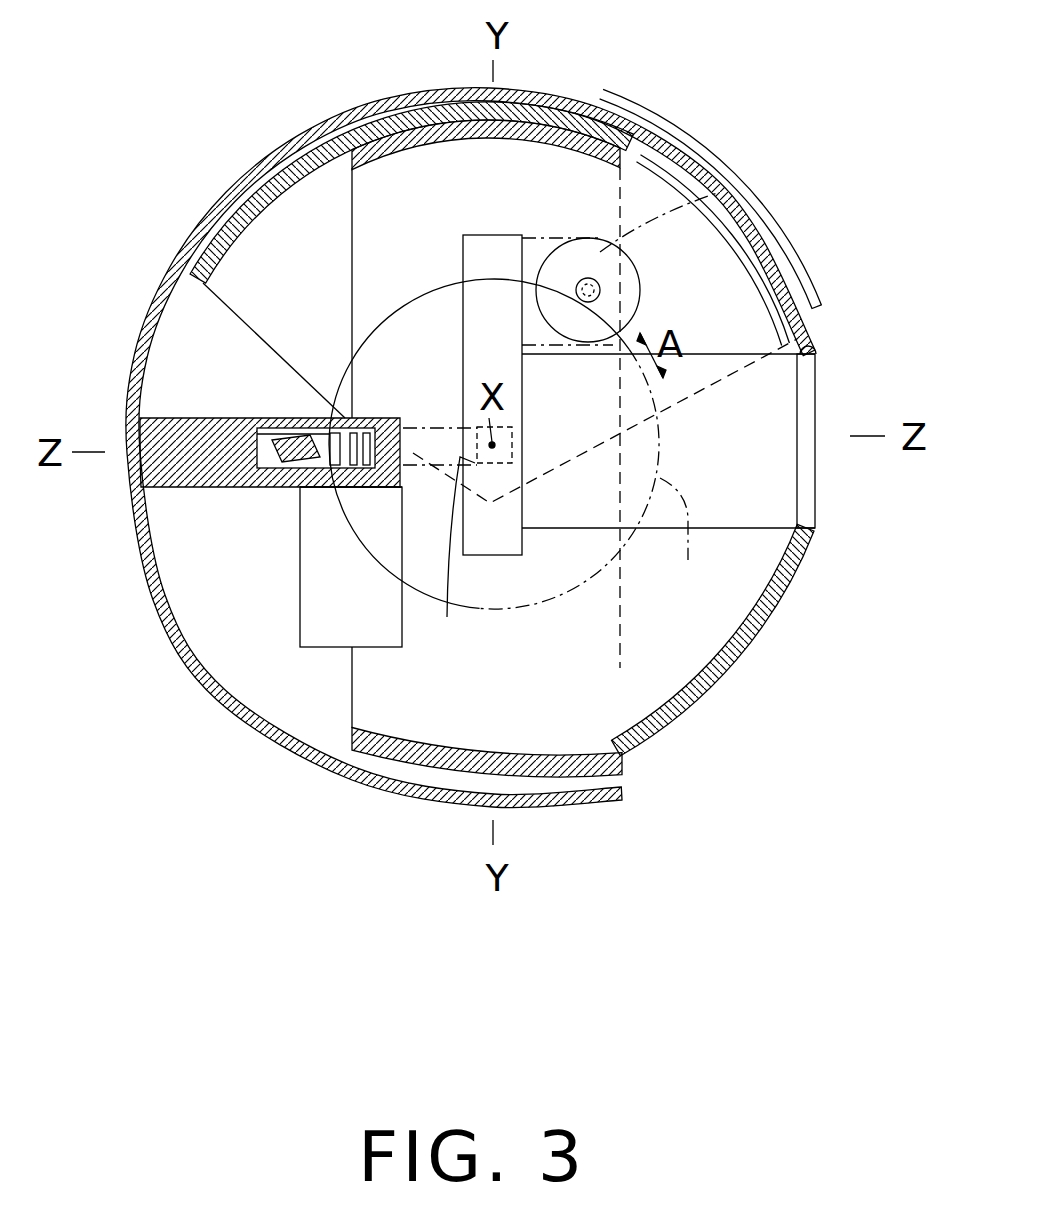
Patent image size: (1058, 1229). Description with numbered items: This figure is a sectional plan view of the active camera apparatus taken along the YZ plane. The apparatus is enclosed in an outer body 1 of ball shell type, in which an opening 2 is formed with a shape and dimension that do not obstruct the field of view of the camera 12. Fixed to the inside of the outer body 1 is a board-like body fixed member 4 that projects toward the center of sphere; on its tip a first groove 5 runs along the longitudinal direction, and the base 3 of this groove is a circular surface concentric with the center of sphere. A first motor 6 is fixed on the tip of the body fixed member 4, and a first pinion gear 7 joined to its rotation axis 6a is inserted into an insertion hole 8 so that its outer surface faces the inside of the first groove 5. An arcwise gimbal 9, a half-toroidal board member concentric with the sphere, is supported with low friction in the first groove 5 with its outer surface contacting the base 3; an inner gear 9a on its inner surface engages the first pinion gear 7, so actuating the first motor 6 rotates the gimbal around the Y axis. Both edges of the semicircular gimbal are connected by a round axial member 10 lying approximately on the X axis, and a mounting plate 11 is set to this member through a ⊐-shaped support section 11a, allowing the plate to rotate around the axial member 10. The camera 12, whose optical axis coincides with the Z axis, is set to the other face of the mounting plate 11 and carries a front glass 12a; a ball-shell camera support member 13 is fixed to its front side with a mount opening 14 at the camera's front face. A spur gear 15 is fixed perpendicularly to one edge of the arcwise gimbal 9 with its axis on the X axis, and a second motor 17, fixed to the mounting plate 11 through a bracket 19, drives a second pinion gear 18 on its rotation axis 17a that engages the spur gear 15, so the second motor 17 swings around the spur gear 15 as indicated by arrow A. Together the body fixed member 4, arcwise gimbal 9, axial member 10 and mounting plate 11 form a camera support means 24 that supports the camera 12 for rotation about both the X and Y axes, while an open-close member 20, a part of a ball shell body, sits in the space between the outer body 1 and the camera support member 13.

The outer body 1 is at (188, 292).
The opening 2 is at (620, 668).
The base 3 is at (262, 472).
The body fixed member 4 is at (130, 420).
The first groove 5 is at (262, 432).
The first motor 6 is at (300, 598).
The rotation axis 6a is at (338, 487).
The first pinion gear 7 is at (378, 414).
The insertion hole 8 is at (338, 418).
The arcwise gimbal 9 is at (300, 442).
The inner gear 9a is at (350, 418).
The axial member 10 is at (513, 437).
The mounting plate 11 is at (488, 237).
The support section 11a is at (479, 468).
The camera 12 is at (747, 510).
The front glass 12a is at (807, 497).
The camera support member 13 is at (720, 670).
The mount opening 14 is at (815, 356).
The spur gear 15 is at (688, 560).
The second motor 17 is at (592, 280).
The rotation axis 17a is at (600, 292).
The second pinion gear 18 is at (698, 178).
The bracket 19 is at (646, 140).
The open-close member 20 is at (798, 243).
The camera support means 24 is at (537, 618).